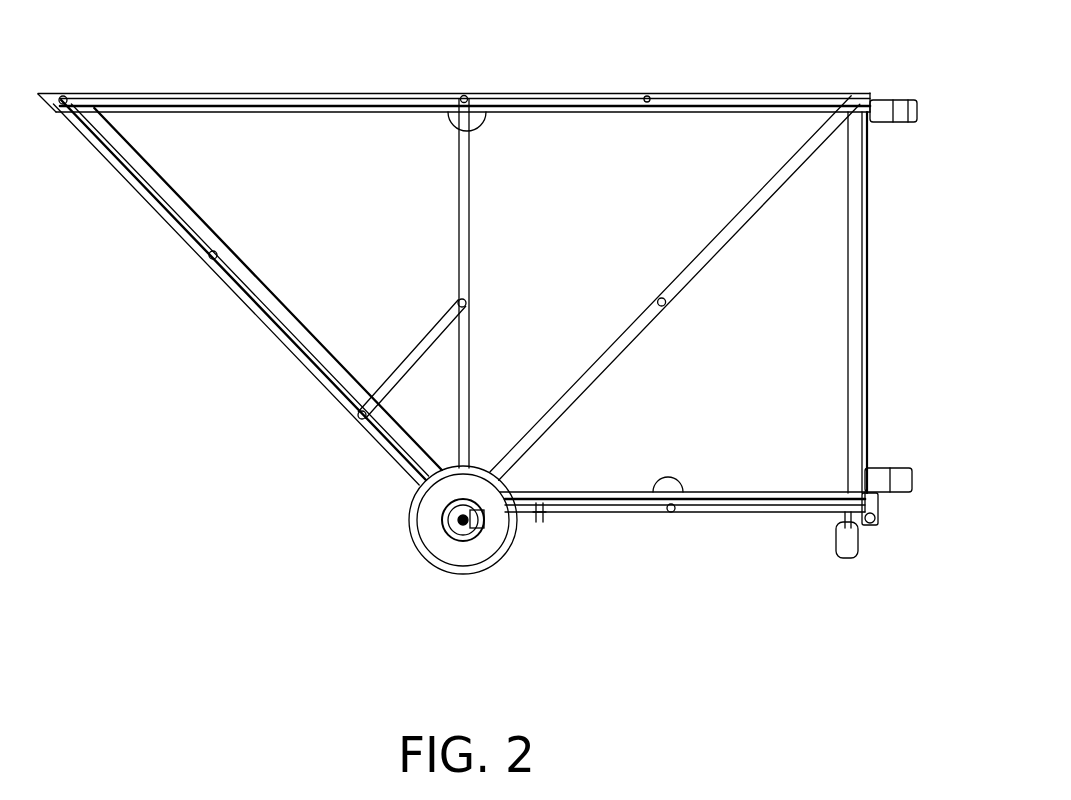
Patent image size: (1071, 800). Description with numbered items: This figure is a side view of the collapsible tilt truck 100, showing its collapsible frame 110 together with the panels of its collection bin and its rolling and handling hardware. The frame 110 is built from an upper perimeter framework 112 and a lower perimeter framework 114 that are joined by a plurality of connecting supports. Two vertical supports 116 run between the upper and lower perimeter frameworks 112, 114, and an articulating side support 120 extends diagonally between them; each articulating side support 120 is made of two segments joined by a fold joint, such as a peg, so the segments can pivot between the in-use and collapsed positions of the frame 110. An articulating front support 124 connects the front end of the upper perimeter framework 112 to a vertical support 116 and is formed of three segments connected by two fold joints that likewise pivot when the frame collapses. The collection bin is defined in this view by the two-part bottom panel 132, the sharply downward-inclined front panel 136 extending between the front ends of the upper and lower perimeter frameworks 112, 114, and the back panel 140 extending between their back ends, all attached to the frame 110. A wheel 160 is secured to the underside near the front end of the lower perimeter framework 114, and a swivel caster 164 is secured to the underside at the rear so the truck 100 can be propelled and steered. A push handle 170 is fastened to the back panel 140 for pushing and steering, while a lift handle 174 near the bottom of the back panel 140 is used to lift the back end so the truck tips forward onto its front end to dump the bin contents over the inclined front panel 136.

The collapsible tilt truck 100 is at (180, 96).
The collapsible frame 110 is at (608, 96).
The upper perimeter framework 112 is at (383, 110).
The lower perimeter framework 114 is at (712, 512).
The vertical support 116 is at (471, 262).
The articulating side support 120 is at (705, 265).
The articulating front support 124 is at (190, 232).
The two-part bottom panel 132 is at (636, 512).
The front panel 136 is at (110, 170).
The back panel 140 is at (868, 282).
The wheel 160 is at (462, 553).
The swivel caster 164 is at (848, 553).
The push handle 170 is at (890, 110).
The lift handle 174 is at (893, 478).